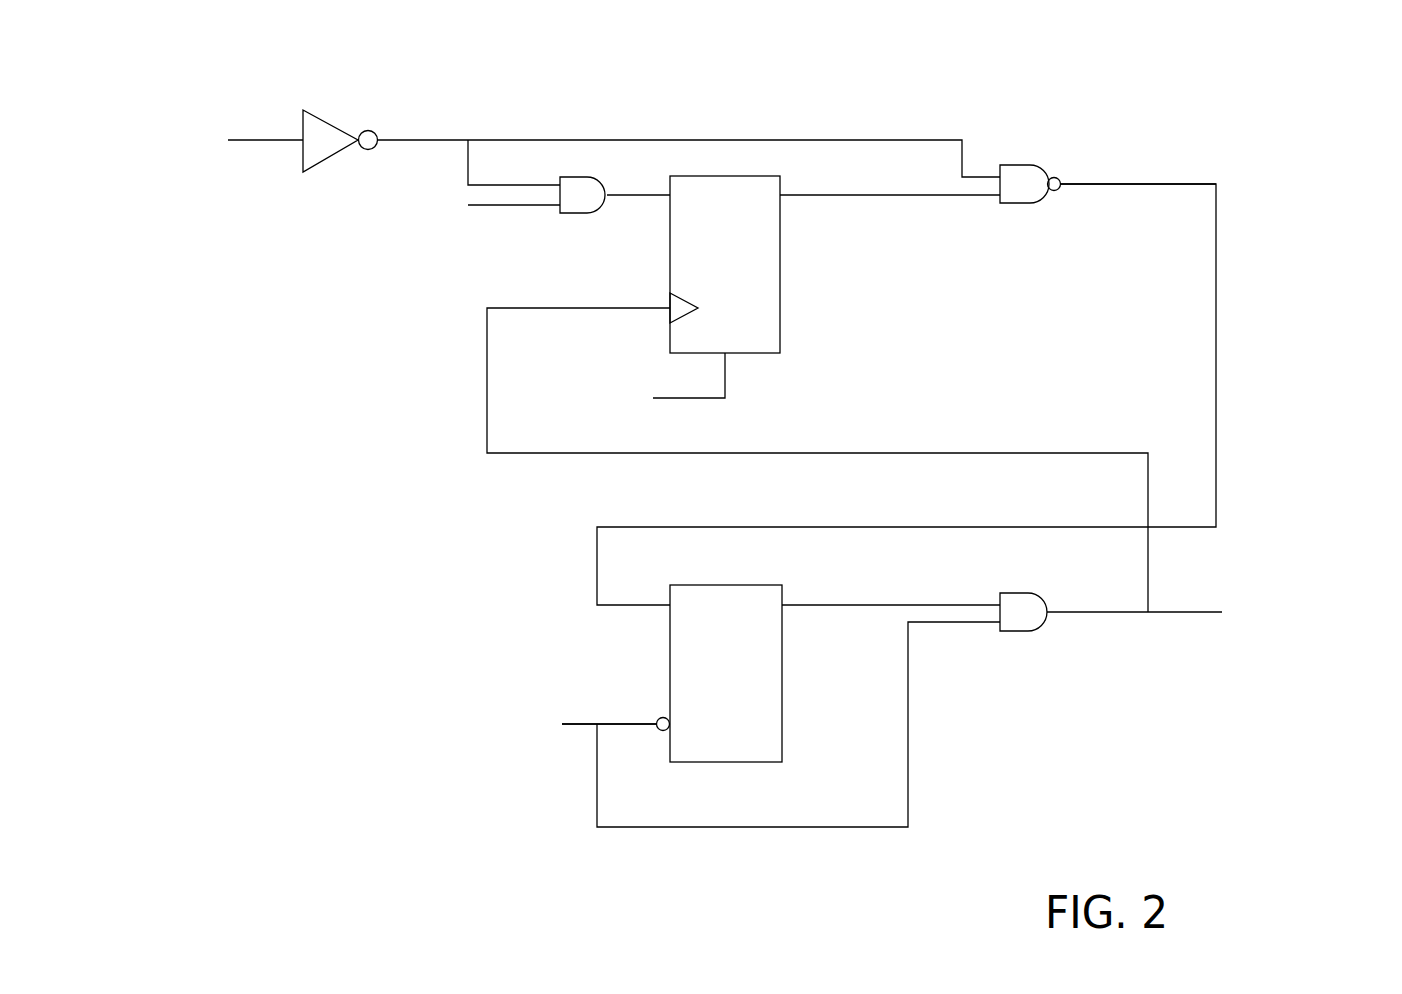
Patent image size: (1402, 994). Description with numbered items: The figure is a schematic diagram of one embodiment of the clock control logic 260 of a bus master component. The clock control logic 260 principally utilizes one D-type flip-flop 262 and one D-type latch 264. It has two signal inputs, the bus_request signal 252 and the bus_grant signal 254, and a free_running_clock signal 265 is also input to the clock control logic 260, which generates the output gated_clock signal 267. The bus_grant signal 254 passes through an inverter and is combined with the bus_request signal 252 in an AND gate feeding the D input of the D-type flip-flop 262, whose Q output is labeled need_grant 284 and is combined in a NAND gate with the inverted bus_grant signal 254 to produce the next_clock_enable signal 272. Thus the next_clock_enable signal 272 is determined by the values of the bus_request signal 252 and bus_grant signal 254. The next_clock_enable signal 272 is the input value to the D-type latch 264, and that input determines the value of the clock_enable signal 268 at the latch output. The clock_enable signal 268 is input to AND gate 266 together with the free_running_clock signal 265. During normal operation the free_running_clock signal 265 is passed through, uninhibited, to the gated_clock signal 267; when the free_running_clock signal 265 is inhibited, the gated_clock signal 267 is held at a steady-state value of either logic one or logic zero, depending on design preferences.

The clock control logic 260 is at (1078, 56).
The bus_grant signal 254 is at (245, 140).
The bus_request signal 252 is at (505, 205).
The D-type flip-flop 262 is at (780, 262).
The need_grant signal 284 is at (930, 195).
The next_clock_enable signal 272 is at (1090, 184).
The D-type latch 264 is at (758, 762).
The clock_enable signal 268 is at (977, 600).
The AND gate 266 is at (1015, 631).
The gated_clock signal 267 is at (1180, 612).
The free_running_clock signal 265 is at (587, 728).